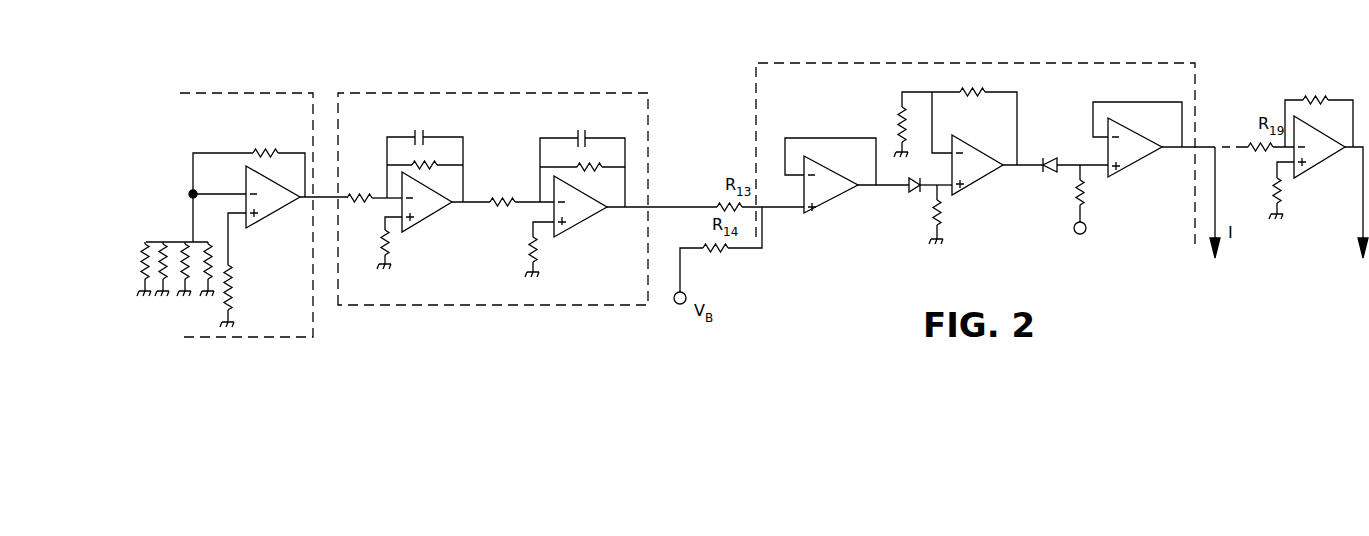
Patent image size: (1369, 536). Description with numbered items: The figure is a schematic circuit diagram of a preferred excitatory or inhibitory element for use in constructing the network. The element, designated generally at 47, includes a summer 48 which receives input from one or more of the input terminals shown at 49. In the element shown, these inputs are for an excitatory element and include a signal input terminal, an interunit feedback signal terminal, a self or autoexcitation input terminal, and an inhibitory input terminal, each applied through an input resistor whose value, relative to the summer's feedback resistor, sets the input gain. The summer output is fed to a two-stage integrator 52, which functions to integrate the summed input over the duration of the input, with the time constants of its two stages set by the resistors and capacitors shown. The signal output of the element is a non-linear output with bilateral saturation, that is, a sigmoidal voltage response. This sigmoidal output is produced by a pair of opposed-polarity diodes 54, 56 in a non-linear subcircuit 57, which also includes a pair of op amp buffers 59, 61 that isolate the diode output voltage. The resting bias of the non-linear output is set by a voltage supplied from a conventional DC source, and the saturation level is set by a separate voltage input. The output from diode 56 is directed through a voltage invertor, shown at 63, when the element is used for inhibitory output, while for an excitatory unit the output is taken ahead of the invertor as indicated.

The element 47 is at (653, 77).
The summer 48 is at (231, 227).
The input terminals 49 is at (177, 242).
The two-stage integrator 52 is at (493, 307).
The diode 54 is at (907, 190).
The diode 56 is at (1047, 172).
The non-linear subcircuit 57 is at (1077, 55).
The op amp buffer 59 is at (822, 207).
The op amp buffer 61 is at (1130, 170).
The operational amplifier U7 63 is at (1317, 165).